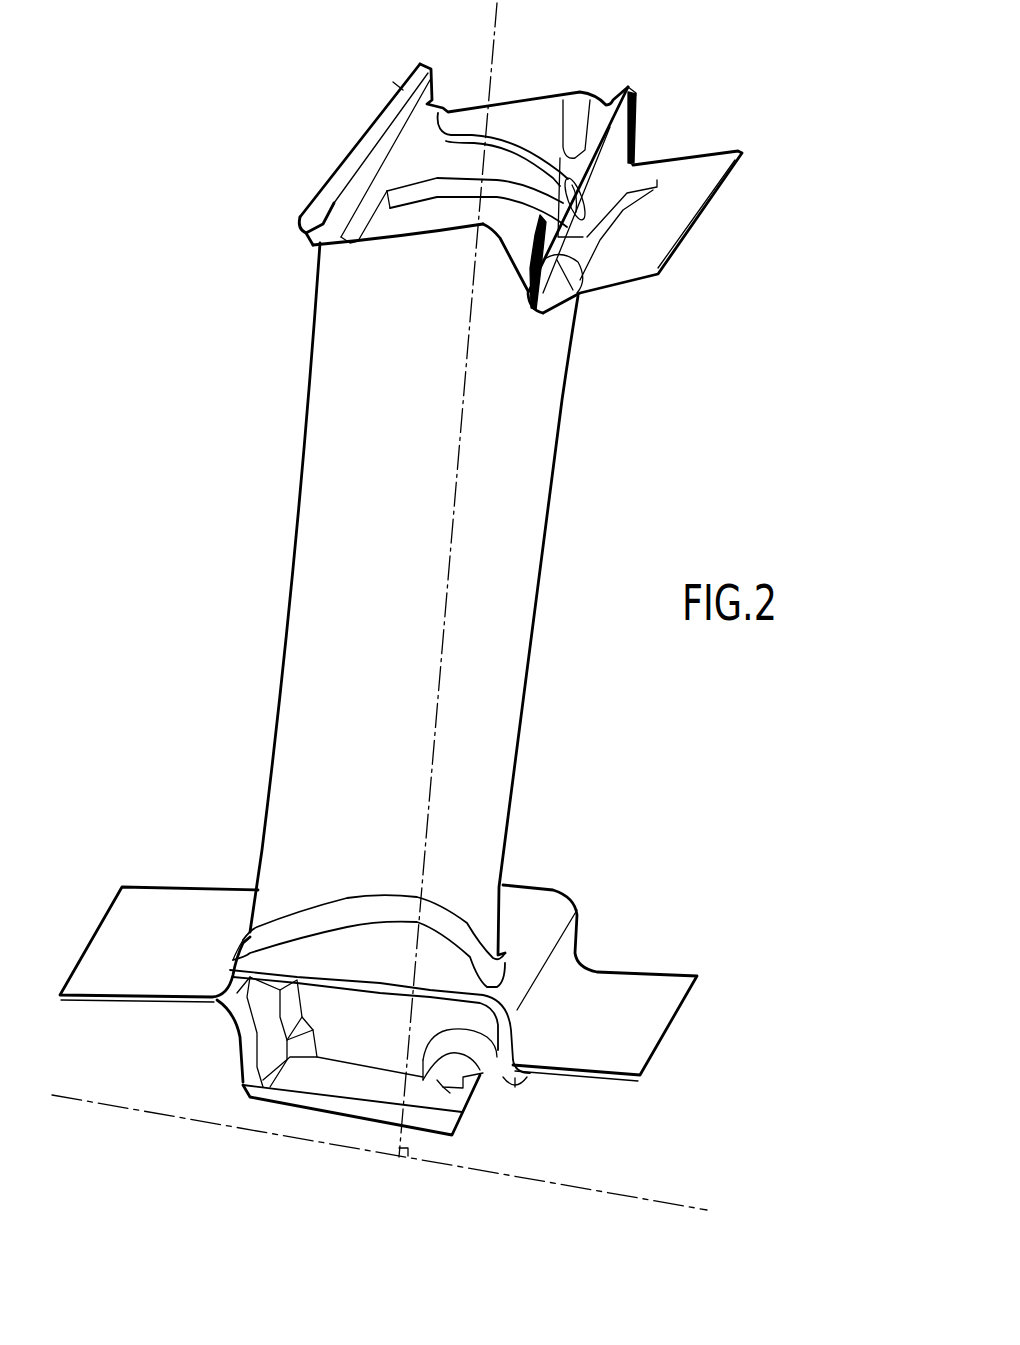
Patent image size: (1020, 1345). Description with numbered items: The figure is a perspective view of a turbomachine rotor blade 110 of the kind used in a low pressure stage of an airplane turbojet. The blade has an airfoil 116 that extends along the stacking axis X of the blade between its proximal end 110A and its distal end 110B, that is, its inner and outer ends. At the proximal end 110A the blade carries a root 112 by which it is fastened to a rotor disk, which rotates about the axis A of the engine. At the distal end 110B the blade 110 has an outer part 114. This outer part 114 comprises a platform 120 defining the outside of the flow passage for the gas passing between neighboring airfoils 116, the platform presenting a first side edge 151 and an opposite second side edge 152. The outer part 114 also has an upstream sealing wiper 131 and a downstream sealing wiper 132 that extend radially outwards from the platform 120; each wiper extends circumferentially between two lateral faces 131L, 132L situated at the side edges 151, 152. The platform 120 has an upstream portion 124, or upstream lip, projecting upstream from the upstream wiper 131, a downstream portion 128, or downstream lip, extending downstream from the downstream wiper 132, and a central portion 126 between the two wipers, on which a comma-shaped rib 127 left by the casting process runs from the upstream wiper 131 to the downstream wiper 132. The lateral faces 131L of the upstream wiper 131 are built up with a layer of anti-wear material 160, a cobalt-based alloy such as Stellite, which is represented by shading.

The turbomachine rotor blade 110 is at (210, 406).
The proximal end 110A is at (600, 878).
The distal end 110B is at (612, 68).
The root 112 is at (440, 1107).
The outer part 114 is at (340, 55).
The airfoil 116 is at (508, 557).
The platform 120 is at (474, 118).
The upstream portion 124 is at (688, 206).
The central portion 126 is at (460, 210).
The comma-shaped rib 127 is at (442, 158).
The downstream portion 128 is at (317, 207).
The upstream sealing wiper 131 is at (610, 127).
The lateral faces of the upstream wiper 131L is at (641, 90).
The downstream sealing wiper 132 is at (362, 157).
The lateral faces of the downstream wiper 132L is at (322, 230).
The first side edge 151 is at (517, 97).
The second side edge 152 is at (425, 236).
The layer of anti-wear material 160 is at (640, 108).
The stacking axis X is at (498, 17).
The engine axis A is at (684, 1207).